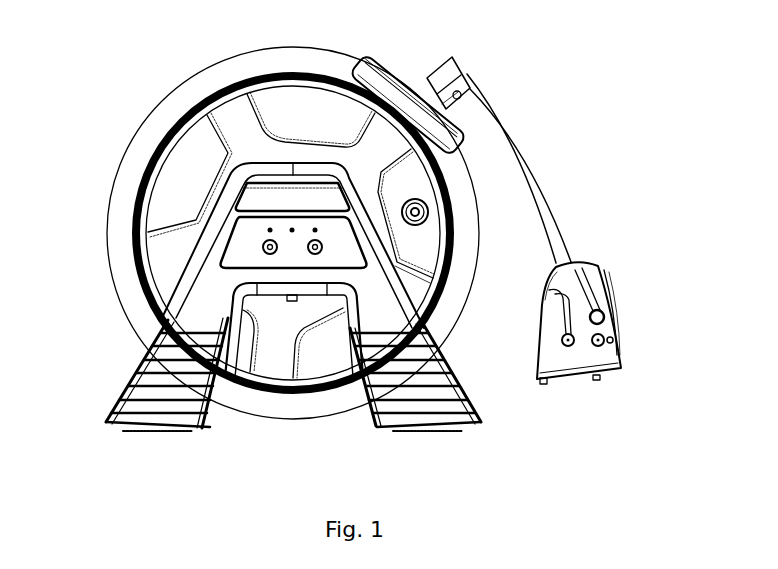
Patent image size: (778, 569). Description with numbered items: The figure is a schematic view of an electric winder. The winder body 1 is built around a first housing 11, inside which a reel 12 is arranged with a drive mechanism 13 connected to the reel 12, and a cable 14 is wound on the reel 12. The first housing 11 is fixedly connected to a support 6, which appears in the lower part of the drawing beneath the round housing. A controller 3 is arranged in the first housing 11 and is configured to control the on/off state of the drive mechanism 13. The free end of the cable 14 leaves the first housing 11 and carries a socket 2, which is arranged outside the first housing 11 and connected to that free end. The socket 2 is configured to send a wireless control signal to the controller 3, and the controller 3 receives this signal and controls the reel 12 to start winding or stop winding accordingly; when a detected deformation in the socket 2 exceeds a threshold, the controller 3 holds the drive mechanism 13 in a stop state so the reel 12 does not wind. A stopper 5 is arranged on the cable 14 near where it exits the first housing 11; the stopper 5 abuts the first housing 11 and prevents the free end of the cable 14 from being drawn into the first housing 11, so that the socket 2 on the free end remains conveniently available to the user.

The winder body 1 is at (455, 302).
The socket 2 is at (603, 358).
The controller 3 is at (430, 214).
The stopper 5 is at (458, 64).
The support 6 is at (440, 418).
The first housing 11 is at (114, 182).
The reel 12 is at (268, 352).
The drive mechanism 13 is at (253, 237).
The cable 14 is at (526, 190).